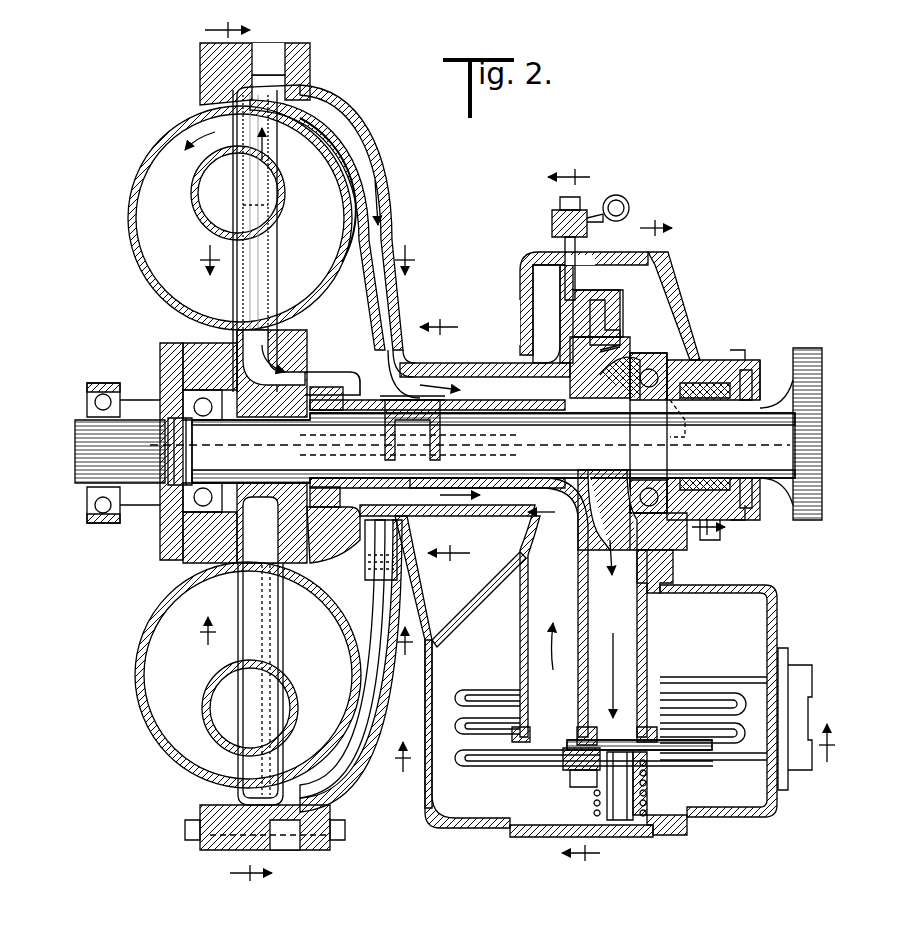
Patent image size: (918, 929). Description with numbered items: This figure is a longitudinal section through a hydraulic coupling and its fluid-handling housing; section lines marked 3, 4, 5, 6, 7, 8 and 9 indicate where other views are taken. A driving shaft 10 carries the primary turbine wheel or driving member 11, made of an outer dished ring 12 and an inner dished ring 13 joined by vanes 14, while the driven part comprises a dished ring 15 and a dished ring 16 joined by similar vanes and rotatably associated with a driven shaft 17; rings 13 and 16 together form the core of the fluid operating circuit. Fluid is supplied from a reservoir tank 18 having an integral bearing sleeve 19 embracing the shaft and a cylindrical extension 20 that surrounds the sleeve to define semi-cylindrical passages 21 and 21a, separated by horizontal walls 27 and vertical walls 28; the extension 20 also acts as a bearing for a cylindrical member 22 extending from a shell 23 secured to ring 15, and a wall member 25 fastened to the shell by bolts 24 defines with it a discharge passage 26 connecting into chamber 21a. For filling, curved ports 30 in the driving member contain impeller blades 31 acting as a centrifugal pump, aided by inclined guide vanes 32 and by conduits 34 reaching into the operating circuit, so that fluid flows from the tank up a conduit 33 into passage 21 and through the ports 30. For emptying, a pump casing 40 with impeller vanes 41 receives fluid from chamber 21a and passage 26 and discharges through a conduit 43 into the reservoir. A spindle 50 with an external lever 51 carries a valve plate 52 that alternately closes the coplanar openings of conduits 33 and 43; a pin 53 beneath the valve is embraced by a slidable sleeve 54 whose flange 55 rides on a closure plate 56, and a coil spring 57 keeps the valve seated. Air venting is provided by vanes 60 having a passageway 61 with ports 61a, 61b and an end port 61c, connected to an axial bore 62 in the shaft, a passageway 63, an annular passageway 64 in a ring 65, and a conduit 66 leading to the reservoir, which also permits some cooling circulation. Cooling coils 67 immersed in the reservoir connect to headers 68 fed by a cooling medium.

The section line 3- 3 is at (306, 264).
The section line 4- 4 is at (299, 651).
The section line 5- 5 is at (618, 760).
The section line 6- 6 is at (445, 442).
The section line 7- 7 is at (574, 517).
The section line 8- 8 is at (682, 377).
The section line 9- 9 is at (238, 454).
The driving shaft 10 is at (780, 470).
The primary turbine wheel 11 is at (253, 192).
The outer dished ring 12 is at (338, 141).
The inner dished ring 13 is at (280, 207).
The vanes 14 is at (320, 182).
The dished ring 15 is at (130, 181).
The dished ring 16 is at (193, 193).
The driven shaft 17 is at (97, 490).
The reservoir tank 18 is at (601, 706).
The bearing sleeve 19 is at (450, 515).
The cylindrical extension 20 is at (381, 550).
The semi-cylindrical passage 21 is at (500, 505).
The semi-cylindrical passage 21a is at (463, 397).
The cylindrical member 22 is at (470, 560).
The shell 23 is at (375, 770).
The bolts 24 is at (400, 565).
The wall member 25 is at (376, 703).
The discharge passage 26 is at (372, 195).
The horizontal walls 27 is at (360, 453).
The vertical walls 28 is at (360, 433).
The curved ports 30 is at (300, 385).
The impeller blades 31 is at (258, 358).
The guide vanes 32 is at (326, 447).
The conduit 33 is at (554, 666).
The conduits 34 is at (278, 277).
The pump casing 40 is at (625, 348).
The impeller vanes 41 is at (583, 352).
The conduit 43 is at (626, 641).
The spindle 50 is at (523, 287).
The lever 51 is at (628, 193).
The valve plate 52 is at (700, 748).
The pin 53 is at (622, 822).
The slidable sleeve 54 is at (593, 808).
The flange 55 is at (660, 832).
The closure plate 56 is at (547, 838).
The coil spring 57 is at (648, 790).
The vanes 60 is at (252, 598).
The passageway 61 is at (275, 615).
The port 61a is at (272, 665).
The port 61b is at (295, 686).
The end port 61c is at (290, 840).
The bore 62 is at (305, 441).
The passageway 63 is at (688, 420).
The annular passageway 64 is at (700, 383).
The ring 65 is at (731, 394).
The conduit 66 is at (672, 302).
The coils 67 is at (490, 770).
The headers 68 is at (810, 772).